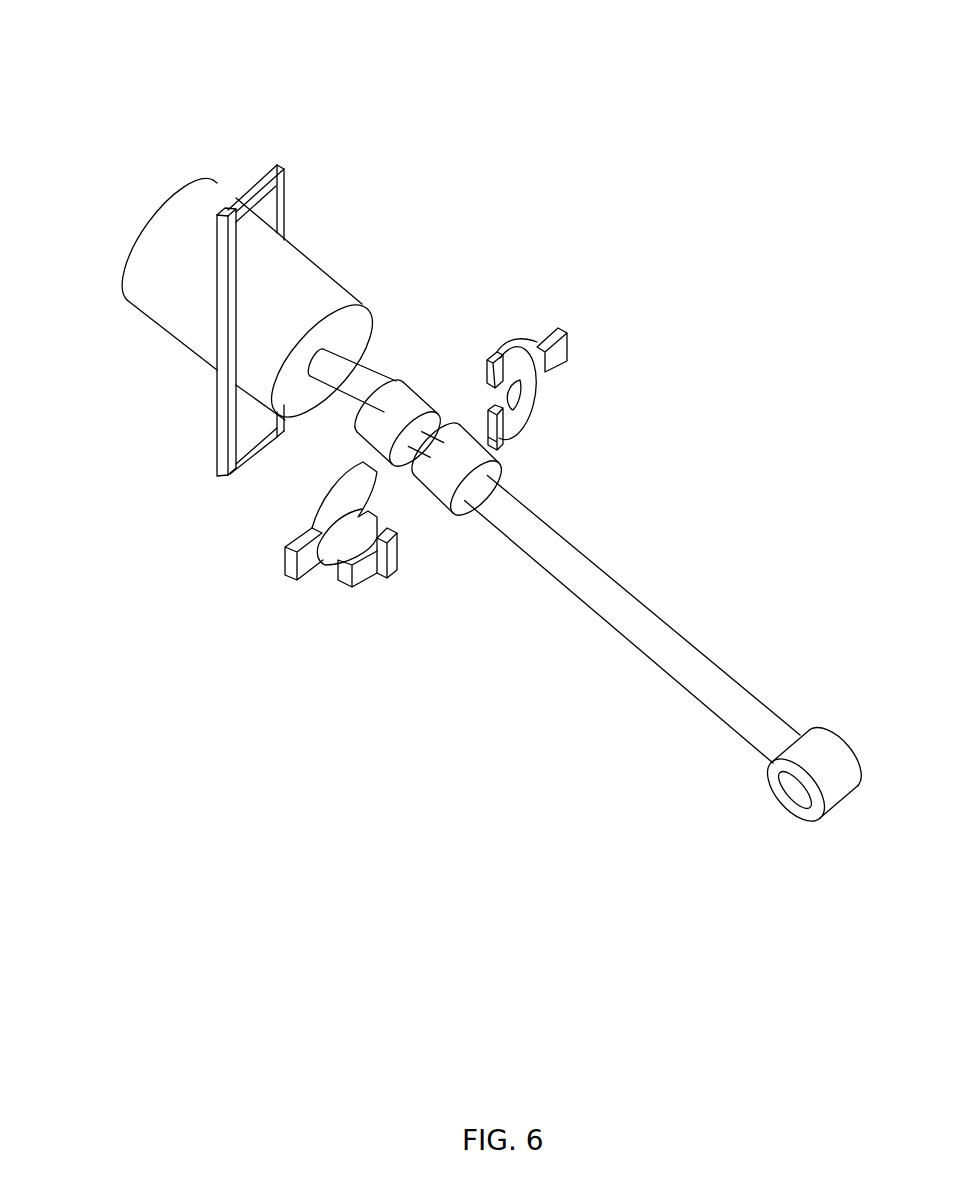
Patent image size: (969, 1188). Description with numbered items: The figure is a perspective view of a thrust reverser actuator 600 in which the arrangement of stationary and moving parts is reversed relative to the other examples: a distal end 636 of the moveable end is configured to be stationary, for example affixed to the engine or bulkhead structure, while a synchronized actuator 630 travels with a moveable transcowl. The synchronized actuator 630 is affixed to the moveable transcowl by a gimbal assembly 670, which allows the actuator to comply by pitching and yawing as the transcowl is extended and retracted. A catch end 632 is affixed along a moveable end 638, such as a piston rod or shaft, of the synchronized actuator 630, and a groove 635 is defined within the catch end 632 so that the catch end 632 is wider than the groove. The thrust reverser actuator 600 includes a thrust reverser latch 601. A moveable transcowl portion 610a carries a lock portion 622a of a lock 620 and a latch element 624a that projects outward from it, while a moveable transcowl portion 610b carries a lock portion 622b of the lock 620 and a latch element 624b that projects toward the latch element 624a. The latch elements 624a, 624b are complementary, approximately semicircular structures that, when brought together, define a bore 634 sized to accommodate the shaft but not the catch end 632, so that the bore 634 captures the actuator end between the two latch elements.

The thrust reverser actuator 600 is at (87, 61).
The thrust reverser latch 601 is at (287, 674).
The moveable transcowl portion 610a is at (285, 565).
The moveable transcowl portion 610b is at (571, 352).
The lock 620 is at (324, 603).
The lock portion 622a is at (388, 578).
The lock portion 622b is at (507, 442).
The latch element 624a is at (340, 492).
The latch element 624b is at (513, 408).
The synchronized actuator 630 is at (133, 257).
The catch end 632 is at (410, 397).
The bore 634 is at (482, 394).
The groove 635 is at (403, 486).
The distal end 636 is at (801, 716).
The moveable end 638 is at (365, 382).
The gimbal assembly 670 is at (216, 443).